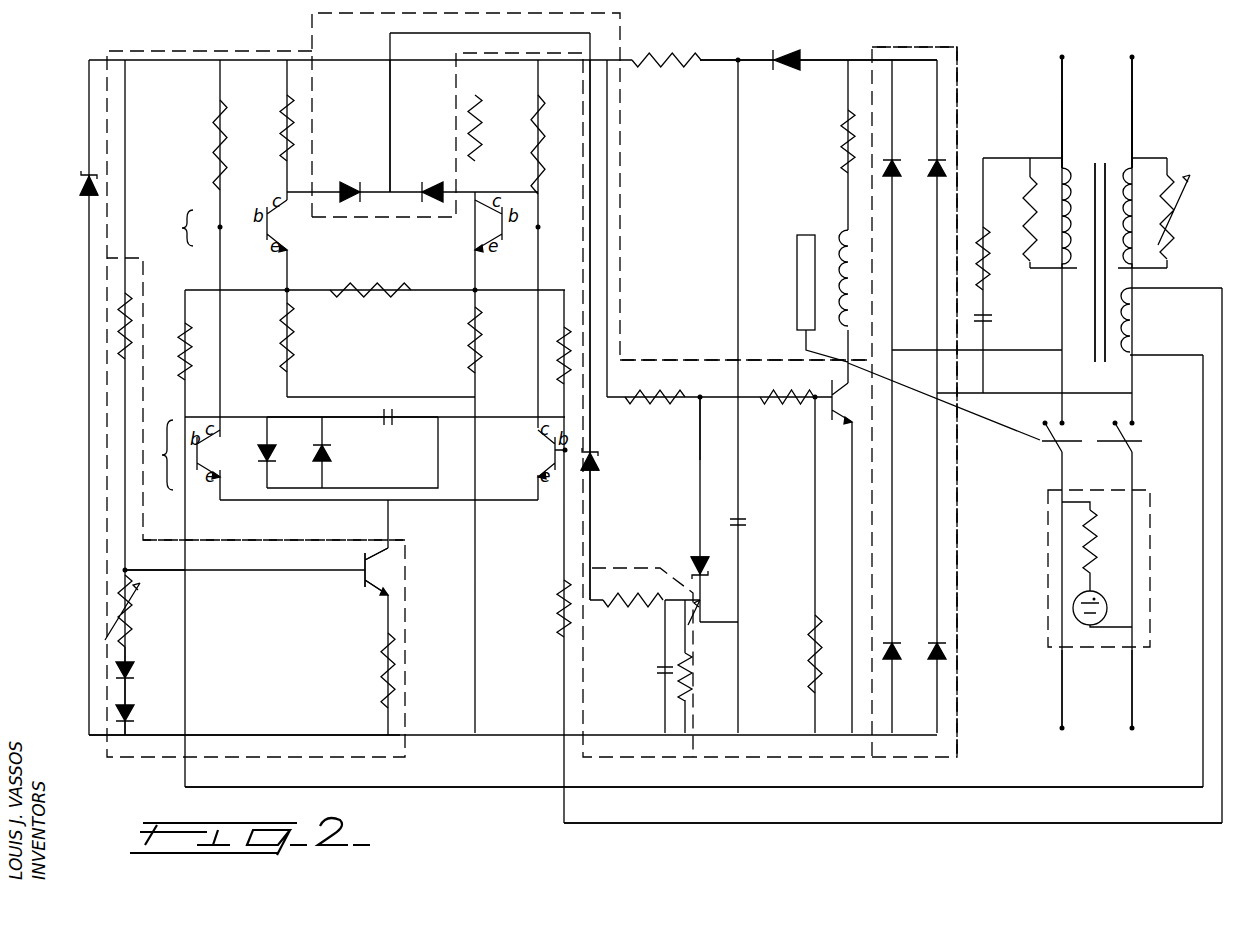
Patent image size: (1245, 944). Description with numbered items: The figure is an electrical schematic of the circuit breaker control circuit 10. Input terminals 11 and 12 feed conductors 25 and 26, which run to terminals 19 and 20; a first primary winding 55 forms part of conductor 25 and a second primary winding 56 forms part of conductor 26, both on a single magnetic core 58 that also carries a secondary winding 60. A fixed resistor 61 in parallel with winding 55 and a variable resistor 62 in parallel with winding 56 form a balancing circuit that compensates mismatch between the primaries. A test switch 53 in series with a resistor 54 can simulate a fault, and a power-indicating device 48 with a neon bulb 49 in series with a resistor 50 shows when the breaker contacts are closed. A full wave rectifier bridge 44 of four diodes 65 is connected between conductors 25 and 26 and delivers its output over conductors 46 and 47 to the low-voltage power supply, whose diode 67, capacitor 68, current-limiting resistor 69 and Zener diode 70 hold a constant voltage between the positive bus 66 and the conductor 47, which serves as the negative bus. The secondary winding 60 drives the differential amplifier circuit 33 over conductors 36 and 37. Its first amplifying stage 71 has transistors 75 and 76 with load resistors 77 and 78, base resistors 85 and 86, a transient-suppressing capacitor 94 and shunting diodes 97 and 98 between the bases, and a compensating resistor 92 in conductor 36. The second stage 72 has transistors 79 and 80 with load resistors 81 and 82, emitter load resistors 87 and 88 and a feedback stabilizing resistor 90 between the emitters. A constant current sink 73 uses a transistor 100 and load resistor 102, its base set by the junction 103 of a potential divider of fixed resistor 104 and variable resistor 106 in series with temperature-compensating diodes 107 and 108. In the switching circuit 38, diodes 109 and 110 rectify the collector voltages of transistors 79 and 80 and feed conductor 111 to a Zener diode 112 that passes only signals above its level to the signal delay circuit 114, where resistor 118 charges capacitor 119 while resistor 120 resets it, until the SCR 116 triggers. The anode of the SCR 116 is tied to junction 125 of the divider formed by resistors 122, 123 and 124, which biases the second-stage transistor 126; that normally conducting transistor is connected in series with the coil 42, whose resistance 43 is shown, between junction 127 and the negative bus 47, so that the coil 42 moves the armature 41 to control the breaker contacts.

The circuit breaker control circuit 10 is at (1147, 54).
The input terminal 11 is at (1060, 55).
The input terminal 12 is at (1130, 55).
The terminal 19 is at (1062, 730).
The terminal 20 is at (1132, 730).
The conductor 25 is at (1065, 135).
The conductor 26 is at (1135, 135).
The differential amplifier circuit 33 is at (434, 767).
The conductor 36 is at (880, 788).
The conductor 37 is at (810, 824).
The switching circuit 38 is at (670, 357).
The armature 41 is at (797, 265).
The coil 42 is at (845, 240).
The resistance in the coil 43 is at (840, 140).
The full wave rectifier bridge 44 is at (963, 599).
The conductor 46 is at (840, 52).
The conductor 47 is at (490, 735).
The power-indicating device 48 is at (1115, 548).
The neon bulb 49 is at (1108, 606).
The resistor 50 is at (1098, 548).
The switch 53 is at (992, 318).
The resistor 54 is at (987, 245).
The first primary winding 55 is at (1066, 172).
The second primary winding 56 is at (1135, 175).
The magnetic core 58 is at (1095, 292).
The secondary winding 60 is at (1138, 328).
The fixed resistor 61 is at (1030, 170).
The variable resistor 62 is at (1170, 178).
The diodes 65 is at (932, 172).
The output bus 66 is at (340, 56).
The diode 67 is at (783, 55).
The capacitor 68 is at (745, 518).
The resistor 69 is at (662, 55).
The Zener diode 70 is at (86, 176).
The first amplifying stage 71 is at (156, 455).
The second stage 72 is at (176, 228).
The constant current sink 73 is at (240, 530).
The transistor 75 is at (205, 455).
The transistor 76 is at (545, 455).
The load resistor 77 is at (213, 145).
The load resistor 78 is at (542, 140).
The third transistor 79 is at (278, 236).
The fourth transistor 80 is at (495, 232).
The load resistor 81 is at (293, 130).
The load resistor 82 is at (480, 140).
The base resistor 85 is at (190, 345).
The base resistor 86 is at (560, 335).
The load resistor 87 is at (292, 355).
The load resistor 88 is at (480, 352).
The feedback stabilizing resistor 90 is at (380, 288).
The compensating resistor 92 is at (558, 605).
The capacitor 94 is at (392, 422).
The diode 97 is at (272, 458).
The diode 98 is at (332, 452).
The transistor 100 is at (378, 565).
The load resistor 102 is at (382, 672).
The junction 103 is at (127, 564).
The fixed resistor 104 is at (128, 305).
The variable resistor 106 is at (130, 638).
The diode 107 is at (130, 672).
The diode 108 is at (128, 712).
The diode 109 is at (357, 176).
The diode 110 is at (428, 178).
The conductor 111 is at (392, 140).
The Zener diode 112 is at (598, 455).
The signal delay circuit 114 is at (706, 726).
The electronic switch 116 is at (710, 565).
The resistor 118 is at (630, 607).
The capacitor 119 is at (660, 675).
The resistor 120 is at (690, 660).
The resistor 122 is at (650, 395).
The resistor 123 is at (772, 395).
The resistor 124 is at (810, 630).
The junction 125 is at (702, 426).
The second-stage switching device 126 is at (842, 407).
The junction 127 is at (738, 63).